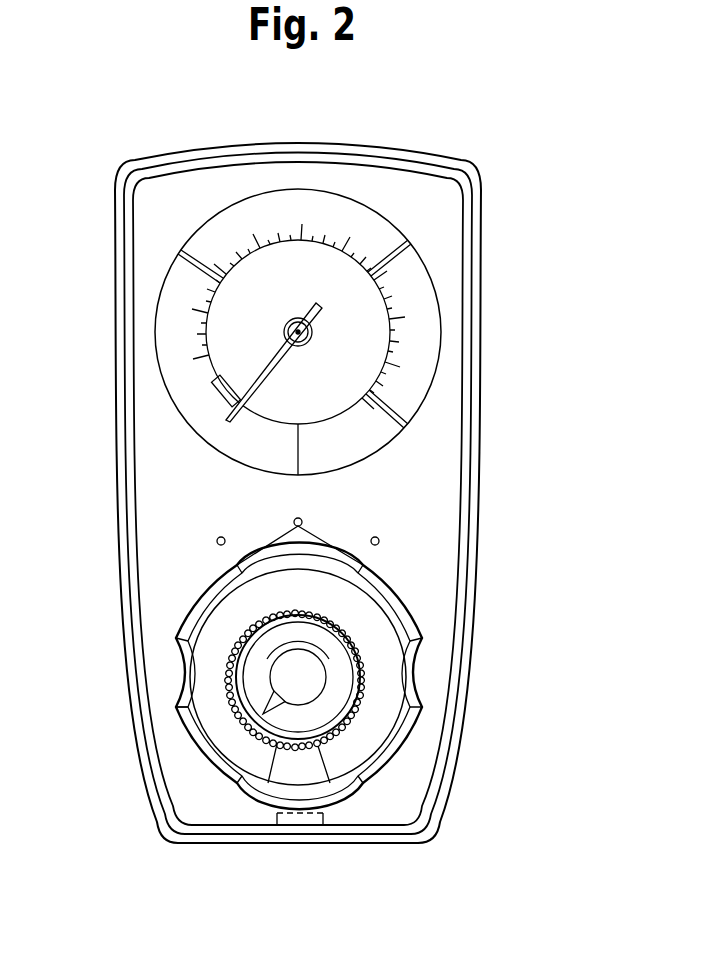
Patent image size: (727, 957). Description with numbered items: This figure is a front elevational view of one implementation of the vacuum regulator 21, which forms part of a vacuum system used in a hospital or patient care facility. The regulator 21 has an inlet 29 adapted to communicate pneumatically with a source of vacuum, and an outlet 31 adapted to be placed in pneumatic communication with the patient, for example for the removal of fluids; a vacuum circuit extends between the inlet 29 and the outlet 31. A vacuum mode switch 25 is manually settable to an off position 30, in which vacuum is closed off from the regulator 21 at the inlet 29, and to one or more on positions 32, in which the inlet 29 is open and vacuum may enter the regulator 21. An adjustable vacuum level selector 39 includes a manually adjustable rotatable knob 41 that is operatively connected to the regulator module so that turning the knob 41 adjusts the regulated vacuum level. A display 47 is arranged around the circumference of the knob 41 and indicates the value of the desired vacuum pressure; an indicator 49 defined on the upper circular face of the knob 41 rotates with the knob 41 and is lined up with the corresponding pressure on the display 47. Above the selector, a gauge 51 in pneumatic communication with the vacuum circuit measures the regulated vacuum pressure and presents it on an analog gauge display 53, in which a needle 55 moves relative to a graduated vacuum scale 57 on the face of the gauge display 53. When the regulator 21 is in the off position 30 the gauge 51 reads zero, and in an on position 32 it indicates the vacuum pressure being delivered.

The vacuum regulator 21 is at (205, 144).
The inlet 29 is at (449, 815).
The gauge 51 is at (180, 275).
The gauge display 53 is at (440, 300).
The needle 55 is at (213, 378).
The graduated vacuum scale 57 is at (418, 389).
The off position 30 is at (294, 521).
The on positions 32 is at (380, 541).
The display 47 is at (392, 645).
The vacuum mode switch 25 is at (407, 723).
The adjustable vacuum level selector 39 is at (220, 771).
The knob 41 is at (252, 679).
The indicator 49 is at (263, 716).
The outlet 31 is at (308, 828).